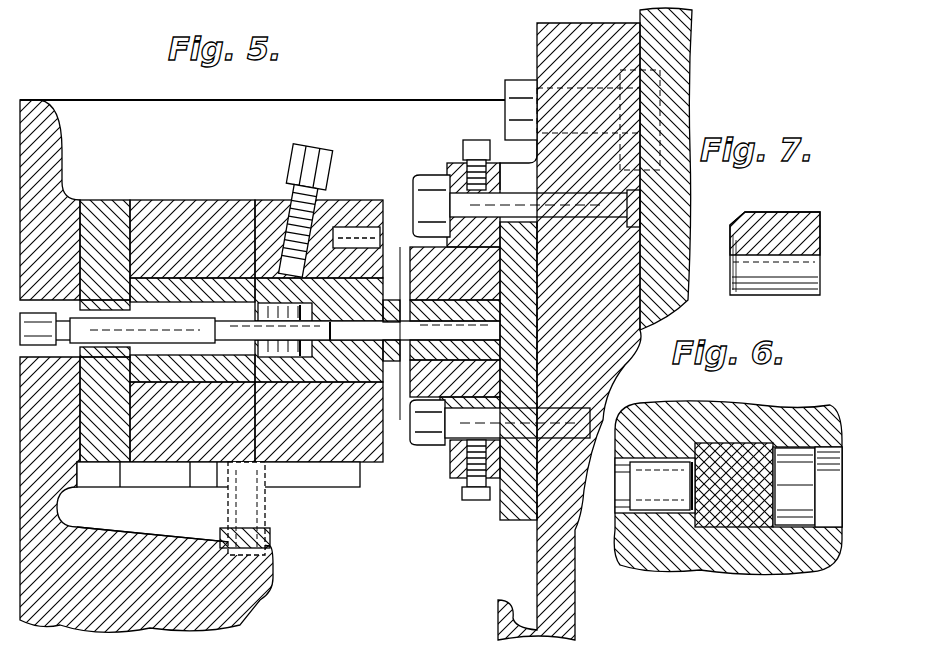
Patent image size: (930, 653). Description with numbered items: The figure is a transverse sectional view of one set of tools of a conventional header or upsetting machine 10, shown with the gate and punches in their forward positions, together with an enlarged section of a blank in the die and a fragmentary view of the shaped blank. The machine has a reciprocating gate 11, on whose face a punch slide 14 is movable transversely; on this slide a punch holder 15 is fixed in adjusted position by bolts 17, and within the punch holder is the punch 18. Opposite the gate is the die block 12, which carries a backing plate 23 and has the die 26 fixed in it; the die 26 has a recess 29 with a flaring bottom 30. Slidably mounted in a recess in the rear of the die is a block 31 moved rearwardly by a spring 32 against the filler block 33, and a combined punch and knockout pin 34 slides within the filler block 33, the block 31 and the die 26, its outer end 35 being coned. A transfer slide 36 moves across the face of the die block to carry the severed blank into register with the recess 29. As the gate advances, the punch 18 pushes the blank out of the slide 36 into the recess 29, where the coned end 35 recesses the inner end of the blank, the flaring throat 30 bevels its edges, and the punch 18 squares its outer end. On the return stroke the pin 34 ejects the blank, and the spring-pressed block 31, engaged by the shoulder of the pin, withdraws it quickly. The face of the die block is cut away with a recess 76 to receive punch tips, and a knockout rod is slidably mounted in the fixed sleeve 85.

In FIG. 5, the header or upsetting machine 10 is at (90, 98).
In FIG. 5, the reciprocating gate 11 is at (700, 58).
In FIG. 6, the reciprocating gate 11 is at (728, 525).
In FIG. 5, the die block 12 is at (160, 464).
In FIG. 5, the punch slide 14 is at (529, 60).
In FIG. 5, the punch holder 15 is at (455, 165).
In FIG. 5, the bolts 17 is at (456, 192).
In FIG. 5, the punch 18 is at (392, 302).
In FIG. 6, the punch 18 is at (796, 505).
In FIG. 5, the backing plate 23 is at (101, 440).
In FIG. 5, the die 26 is at (266, 282).
In FIG. 6, the die 26 is at (724, 572).
In FIG. 6, the recess 29 is at (826, 470).
In FIG. 5, the flaring bottom 30 is at (345, 385).
In FIG. 6, the flaring bottom 30 is at (700, 522).
In FIG. 5, the block 31 is at (278, 386).
In FIG. 5, the spring 32 is at (306, 386).
In FIG. 5, the filler block 33 is at (150, 292).
In FIG. 5, the combined punch and knockout pin 34 is at (100, 318).
In FIG. 6, the combined punch and knockout pin 34 is at (655, 492).
In FIG. 5, the coned outer end 35 is at (332, 322).
In FIG. 6, the coned outer end 35 is at (694, 478).
In FIG. 5, the slide 36 is at (397, 380).
In FIG. 5, the recess 76 is at (344, 230).
In FIG. 5, the fixed sleeve 85 is at (28, 351).